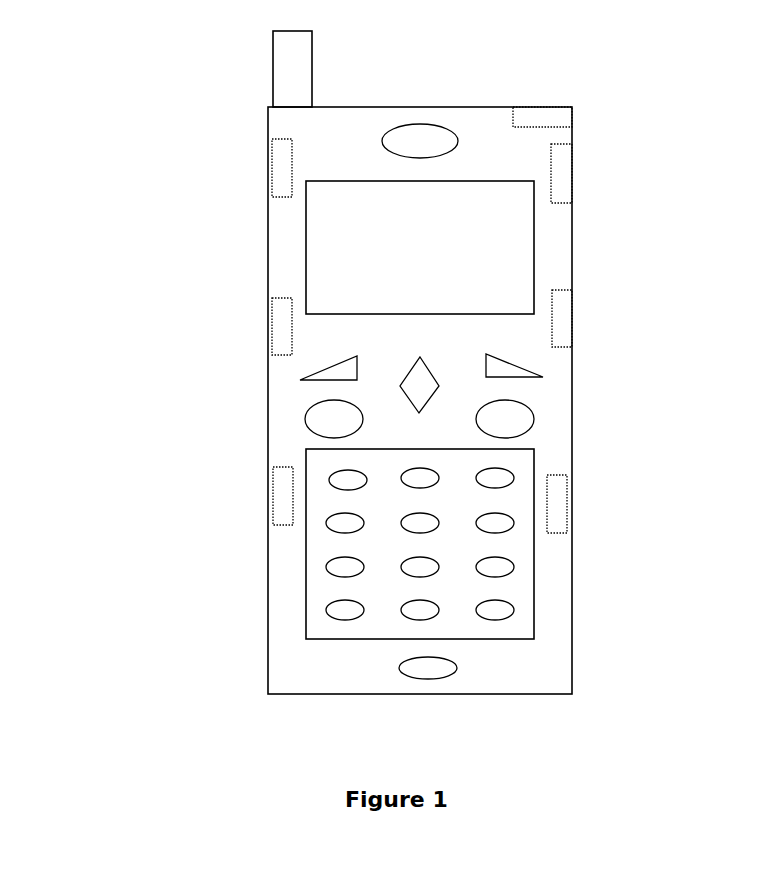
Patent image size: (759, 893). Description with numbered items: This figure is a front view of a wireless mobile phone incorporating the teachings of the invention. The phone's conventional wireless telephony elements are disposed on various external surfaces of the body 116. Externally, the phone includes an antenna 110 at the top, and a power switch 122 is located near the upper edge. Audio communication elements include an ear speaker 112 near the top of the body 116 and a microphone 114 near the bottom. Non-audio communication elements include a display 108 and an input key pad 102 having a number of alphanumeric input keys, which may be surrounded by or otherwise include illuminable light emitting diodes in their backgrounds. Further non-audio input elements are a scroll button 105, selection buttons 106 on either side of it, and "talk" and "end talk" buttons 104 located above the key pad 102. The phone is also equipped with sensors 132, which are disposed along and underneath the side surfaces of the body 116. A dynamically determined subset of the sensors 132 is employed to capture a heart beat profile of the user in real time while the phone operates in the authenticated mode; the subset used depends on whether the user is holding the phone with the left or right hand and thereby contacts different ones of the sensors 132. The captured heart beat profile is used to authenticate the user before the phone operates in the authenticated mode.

The input key pad 102 is at (332, 545).
The "talk" and "end talk" buttons 104 is at (323, 429).
The scroll button 105 is at (420, 373).
The selection buttons 106 is at (323, 378).
The display 108 is at (317, 222).
The antenna 110 is at (293, 82).
The ear speaker 112 is at (420, 123).
The microphone 114 is at (398, 668).
The body 116 is at (298, 268).
The power switch 122 is at (540, 112).
The sensors 132 is at (260, 153).